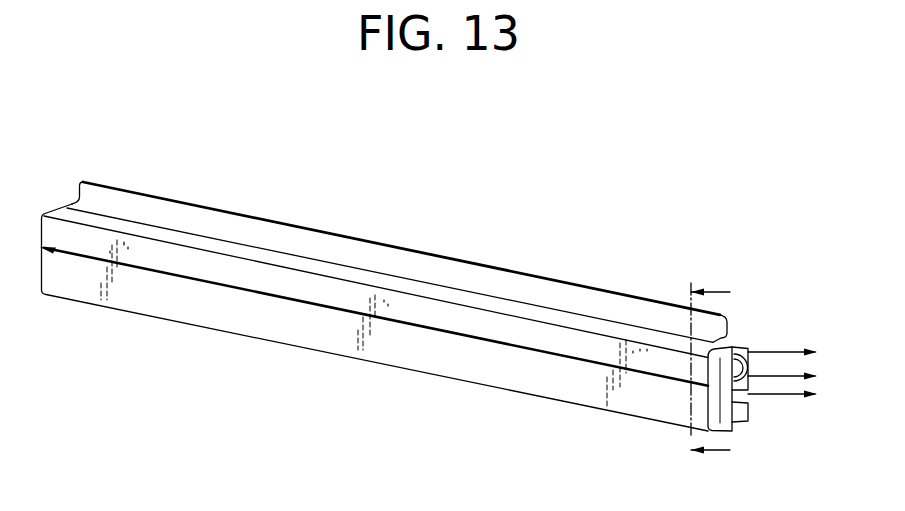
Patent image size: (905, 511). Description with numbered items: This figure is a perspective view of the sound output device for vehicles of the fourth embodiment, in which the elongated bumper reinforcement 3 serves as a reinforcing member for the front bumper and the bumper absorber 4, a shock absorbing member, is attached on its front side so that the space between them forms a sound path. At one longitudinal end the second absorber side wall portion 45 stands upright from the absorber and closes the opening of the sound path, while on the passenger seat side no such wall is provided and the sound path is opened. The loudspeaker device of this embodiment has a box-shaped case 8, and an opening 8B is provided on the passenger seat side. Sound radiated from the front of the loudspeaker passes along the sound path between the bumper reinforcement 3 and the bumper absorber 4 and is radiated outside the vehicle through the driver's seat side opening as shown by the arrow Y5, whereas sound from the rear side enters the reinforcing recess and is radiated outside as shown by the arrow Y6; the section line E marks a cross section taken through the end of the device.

The bumper reinforcement 3 is at (637, 312).
The bumper absorber 4 is at (527, 373).
The second absorber side wall portion 45 is at (713, 386).
The case 8 is at (740, 341).
The opening 8B is at (750, 362).
The arrow Y5 is at (340, 309).
The arrow Y6 is at (772, 352).
The section line E- E is at (713, 377).